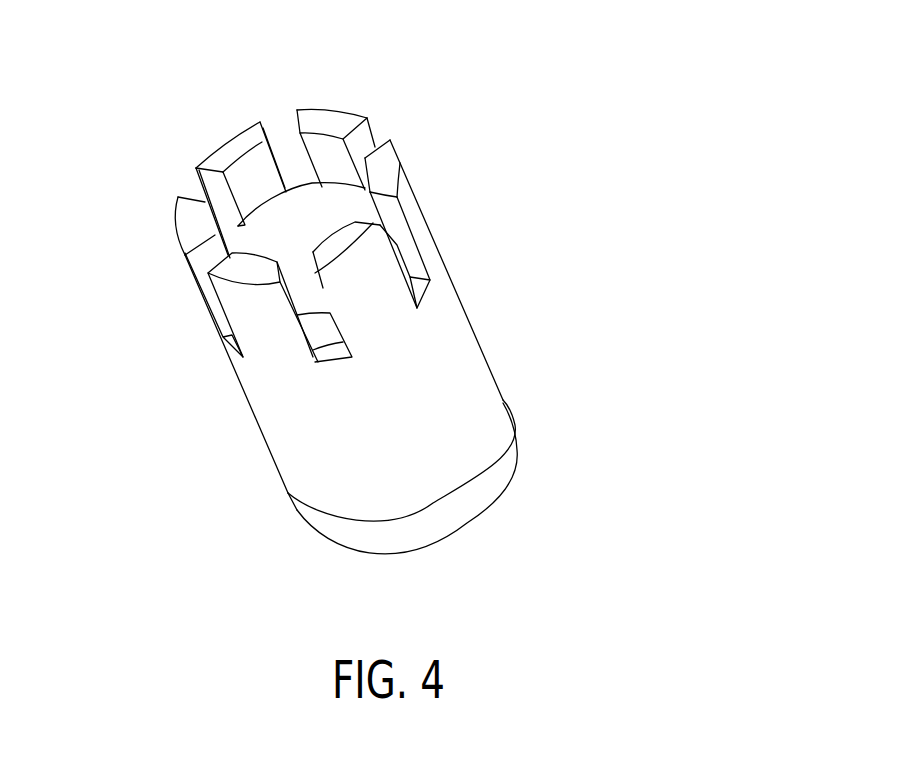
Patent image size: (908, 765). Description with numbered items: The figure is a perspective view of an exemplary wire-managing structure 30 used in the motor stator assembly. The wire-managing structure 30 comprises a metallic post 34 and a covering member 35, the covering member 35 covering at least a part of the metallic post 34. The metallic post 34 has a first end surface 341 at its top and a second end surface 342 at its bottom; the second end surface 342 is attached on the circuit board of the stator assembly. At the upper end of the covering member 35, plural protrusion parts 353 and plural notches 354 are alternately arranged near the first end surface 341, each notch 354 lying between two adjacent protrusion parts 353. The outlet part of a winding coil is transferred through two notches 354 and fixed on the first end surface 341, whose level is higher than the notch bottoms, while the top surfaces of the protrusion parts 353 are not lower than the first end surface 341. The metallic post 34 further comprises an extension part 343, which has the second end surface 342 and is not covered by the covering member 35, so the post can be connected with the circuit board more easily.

The wire-managing structure 30 is at (881, 92).
The metallic post 34 is at (328, 332).
The first end surface 341 is at (312, 230).
The second end surface 342 is at (430, 545).
The extension part 343 is at (507, 462).
The covering member 35 is at (425, 340).
The protrusion part 353 is at (347, 123).
The notch 354 is at (285, 128).